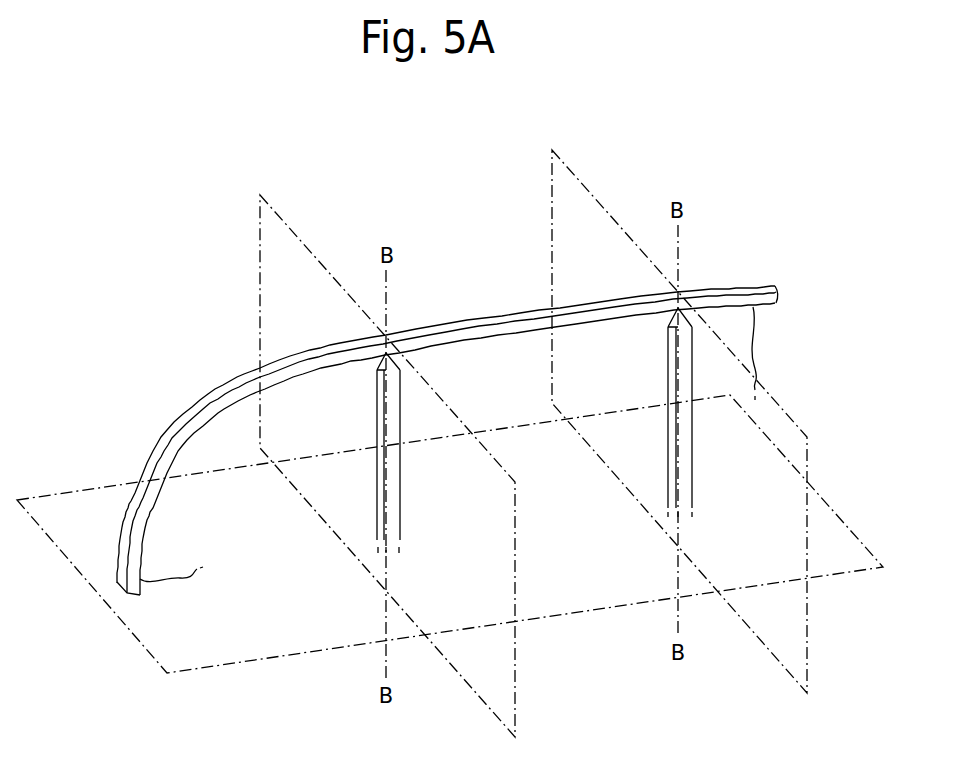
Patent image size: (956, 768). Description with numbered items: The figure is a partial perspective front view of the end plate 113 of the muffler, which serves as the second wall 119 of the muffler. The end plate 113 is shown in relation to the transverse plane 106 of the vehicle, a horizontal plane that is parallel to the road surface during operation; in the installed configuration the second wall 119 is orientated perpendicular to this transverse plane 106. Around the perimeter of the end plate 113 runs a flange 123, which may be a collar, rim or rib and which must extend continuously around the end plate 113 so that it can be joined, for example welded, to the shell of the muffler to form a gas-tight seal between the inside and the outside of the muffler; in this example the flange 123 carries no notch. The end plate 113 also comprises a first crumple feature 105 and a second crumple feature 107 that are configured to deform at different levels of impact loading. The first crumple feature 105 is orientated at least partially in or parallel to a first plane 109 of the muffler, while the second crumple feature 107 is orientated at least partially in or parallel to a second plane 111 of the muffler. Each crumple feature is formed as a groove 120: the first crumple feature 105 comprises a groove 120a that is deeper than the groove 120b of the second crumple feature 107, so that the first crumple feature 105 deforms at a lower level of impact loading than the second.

The first crumple feature 105 is at (413, 540).
The transverse plane 106 is at (108, 607).
The second crumple feature 107 is at (702, 503).
The first plane 109 is at (278, 212).
The second plane 111 is at (552, 163).
The end plate 113 is at (428, 414).
The second wall 119 is at (451, 443).
The groove 120 is at (618, 455).
The groove of the first crumple feature 120a is at (471, 478).
The groove of the second crumple feature 120b is at (764, 433).
The flange 123 is at (768, 290).